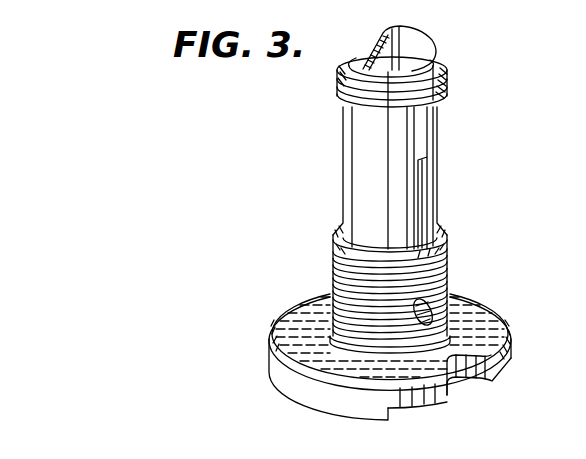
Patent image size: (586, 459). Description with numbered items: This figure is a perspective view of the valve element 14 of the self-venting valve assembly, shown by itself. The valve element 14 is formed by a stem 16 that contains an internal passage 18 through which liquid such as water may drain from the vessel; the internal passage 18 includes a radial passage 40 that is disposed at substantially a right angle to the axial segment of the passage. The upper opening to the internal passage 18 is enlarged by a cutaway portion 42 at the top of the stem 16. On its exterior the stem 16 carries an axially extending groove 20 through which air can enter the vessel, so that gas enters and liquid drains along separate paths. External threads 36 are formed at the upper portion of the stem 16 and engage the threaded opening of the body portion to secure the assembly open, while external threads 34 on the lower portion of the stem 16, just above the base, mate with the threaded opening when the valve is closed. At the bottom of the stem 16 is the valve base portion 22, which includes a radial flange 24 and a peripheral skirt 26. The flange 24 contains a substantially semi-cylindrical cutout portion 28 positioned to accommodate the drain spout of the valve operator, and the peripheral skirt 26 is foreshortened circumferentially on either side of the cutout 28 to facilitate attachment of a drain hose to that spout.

The valve element 14 is at (340, 182).
The stem 16 is at (428, 196).
The internal passage 18 is at (402, 47).
The axially extending groove 20 is at (443, 87).
The valve base portion 22 is at (326, 311).
The radial flange 24 is at (484, 322).
The peripheral skirt 26 is at (328, 407).
The semi-cylindrical cutout portion 28 is at (475, 366).
The external threads 34 is at (446, 255).
The external threads 36 is at (337, 93).
The radial passage 40 is at (446, 276).
The cutaway portion 42 is at (372, 51).